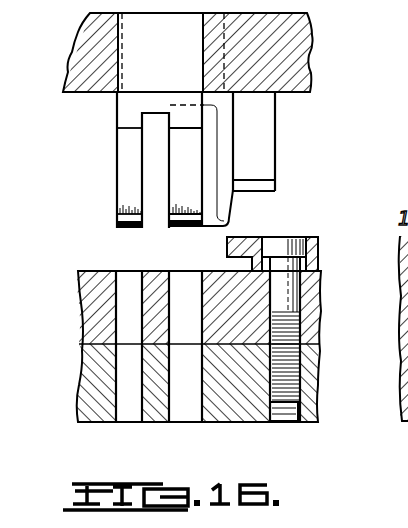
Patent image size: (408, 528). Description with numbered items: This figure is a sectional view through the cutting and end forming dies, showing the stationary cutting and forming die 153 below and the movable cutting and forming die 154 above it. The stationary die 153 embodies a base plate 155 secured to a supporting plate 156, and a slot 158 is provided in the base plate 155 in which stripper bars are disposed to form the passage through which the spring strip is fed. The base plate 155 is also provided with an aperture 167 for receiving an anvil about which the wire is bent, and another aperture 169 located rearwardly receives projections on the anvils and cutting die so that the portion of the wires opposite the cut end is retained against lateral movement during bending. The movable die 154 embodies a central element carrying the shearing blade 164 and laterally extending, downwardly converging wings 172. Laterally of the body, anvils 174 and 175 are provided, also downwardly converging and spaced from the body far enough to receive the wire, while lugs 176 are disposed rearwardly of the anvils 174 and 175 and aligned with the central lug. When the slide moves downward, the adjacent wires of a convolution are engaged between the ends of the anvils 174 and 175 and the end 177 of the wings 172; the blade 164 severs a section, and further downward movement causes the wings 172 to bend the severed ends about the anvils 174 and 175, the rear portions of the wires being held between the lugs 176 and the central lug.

The movable cutting and forming die 154 is at (313, 45).
The shearing blade 164 is at (268, 126).
The wings 172 is at (223, 152).
The end of the wings 177 is at (272, 195).
The lugs 176 is at (123, 165).
The anvil 174 is at (173, 178).
The anvil 175 is at (115, 223).
The aperture 169 is at (132, 271).
The aperture 167 is at (195, 271).
The slot 158 is at (319, 269).
The base plate 155 is at (404, 305).
The supporting plate 156 is at (312, 367).
The stationary cutting and forming die 153 is at (289, 427).